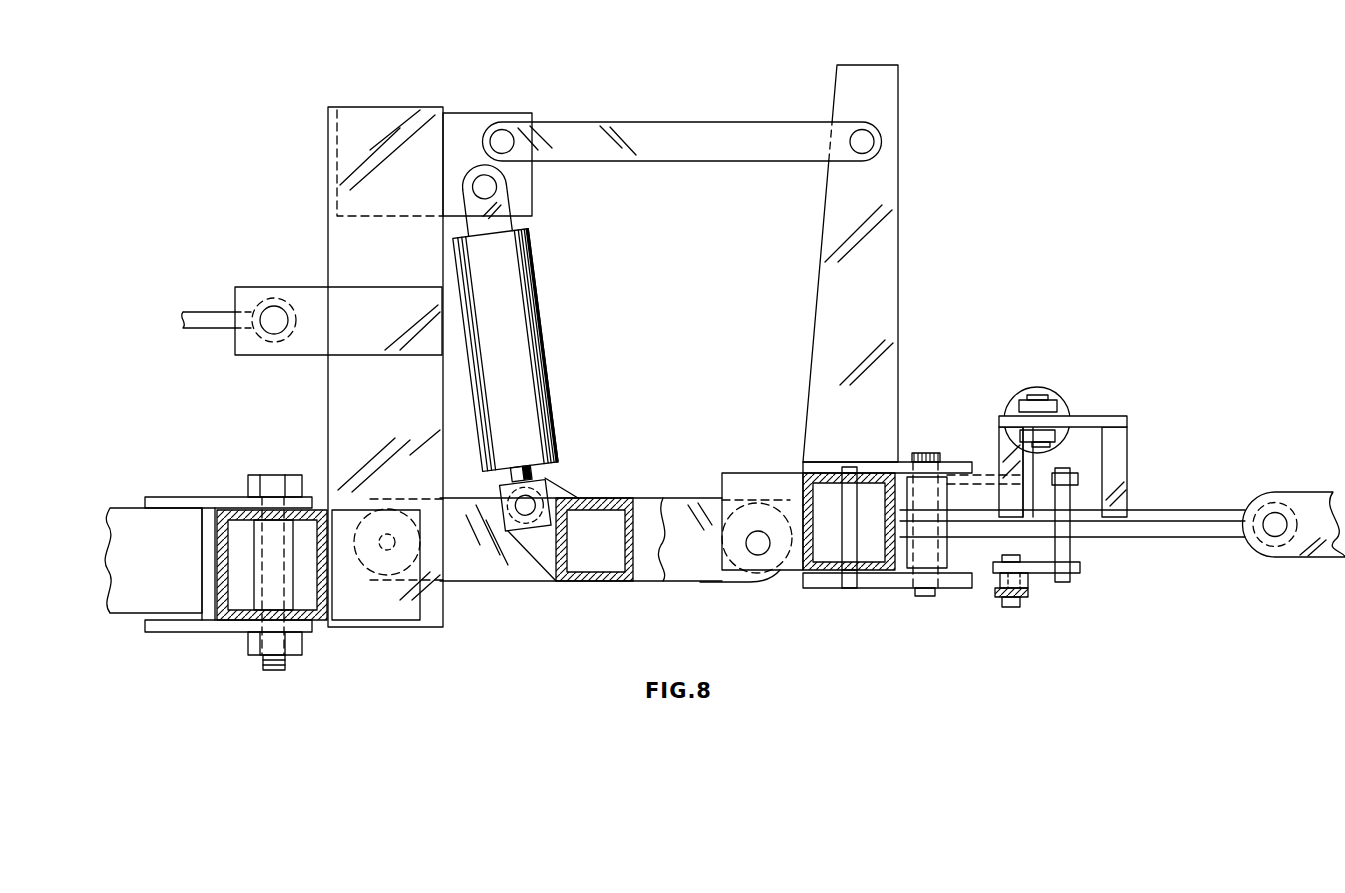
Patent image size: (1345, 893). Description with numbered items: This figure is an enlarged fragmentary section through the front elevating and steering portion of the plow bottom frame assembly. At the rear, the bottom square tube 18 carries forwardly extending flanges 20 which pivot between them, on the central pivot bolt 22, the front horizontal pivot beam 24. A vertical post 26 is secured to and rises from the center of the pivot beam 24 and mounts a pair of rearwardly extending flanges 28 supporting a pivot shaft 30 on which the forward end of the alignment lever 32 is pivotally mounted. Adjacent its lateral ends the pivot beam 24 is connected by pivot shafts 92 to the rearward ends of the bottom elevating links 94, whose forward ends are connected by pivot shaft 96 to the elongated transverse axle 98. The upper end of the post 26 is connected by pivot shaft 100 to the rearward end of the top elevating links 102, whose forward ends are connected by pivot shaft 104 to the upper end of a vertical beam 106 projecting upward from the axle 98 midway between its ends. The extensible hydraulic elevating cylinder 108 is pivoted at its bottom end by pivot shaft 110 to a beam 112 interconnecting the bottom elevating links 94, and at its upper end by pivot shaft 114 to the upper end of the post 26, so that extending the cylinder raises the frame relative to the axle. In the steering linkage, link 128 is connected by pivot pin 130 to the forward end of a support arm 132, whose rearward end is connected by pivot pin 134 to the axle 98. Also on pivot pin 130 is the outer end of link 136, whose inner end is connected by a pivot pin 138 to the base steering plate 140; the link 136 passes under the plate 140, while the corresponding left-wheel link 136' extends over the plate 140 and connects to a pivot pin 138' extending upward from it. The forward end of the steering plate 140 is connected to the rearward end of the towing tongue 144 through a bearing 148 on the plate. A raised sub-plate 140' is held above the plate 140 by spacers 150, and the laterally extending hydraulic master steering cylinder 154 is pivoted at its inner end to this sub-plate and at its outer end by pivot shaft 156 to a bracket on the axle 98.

The bottom square tube 18 is at (165, 613).
The forwardly extending flanges 20 is at (182, 499).
The central pivot bolt 22 is at (262, 477).
The horizontal pivot beam 24 is at (320, 616).
The vertical post 26 is at (328, 392).
The rearwardly extending flanges 28 is at (256, 353).
The pivot shaft 30 is at (274, 306).
The alignment lever 32 is at (202, 312).
The pivot shafts 92 is at (480, 582).
The bottom elevating links 94 is at (526, 575).
The pivot shaft 96 is at (762, 548).
The transverse axle 98 is at (772, 473).
The pivot shaft 100 is at (502, 130).
The top elevating links 102 is at (678, 130).
The pivot shaft 104 is at (866, 142).
The vertical beam 106 is at (885, 193).
The hydraulic elevating cylinder 108 is at (532, 262).
The pivot shaft 110 is at (530, 507).
The beam 112 is at (602, 581).
The pivot shaft 114 is at (495, 188).
The link 128 is at (1030, 595).
The pivot pin 130 is at (1010, 607).
The support arm 132 is at (893, 578).
The pivot pin 134 is at (848, 590).
The link 136 is at (975, 525).
The link 136' is at (965, 487).
The pivot pin 138 is at (1023, 529).
The pivot pin 138' is at (1093, 475).
The base steering plate 140 is at (1072, 502).
The raised sub-plate 140' is at (1137, 452).
The towing tongue 144 is at (1312, 500).
The bearing 148 is at (1285, 508).
The spacers 150 is at (1122, 445).
The hydraulic master steering cylinder 154 is at (1012, 392).
The pivot shaft 156 is at (1040, 398).